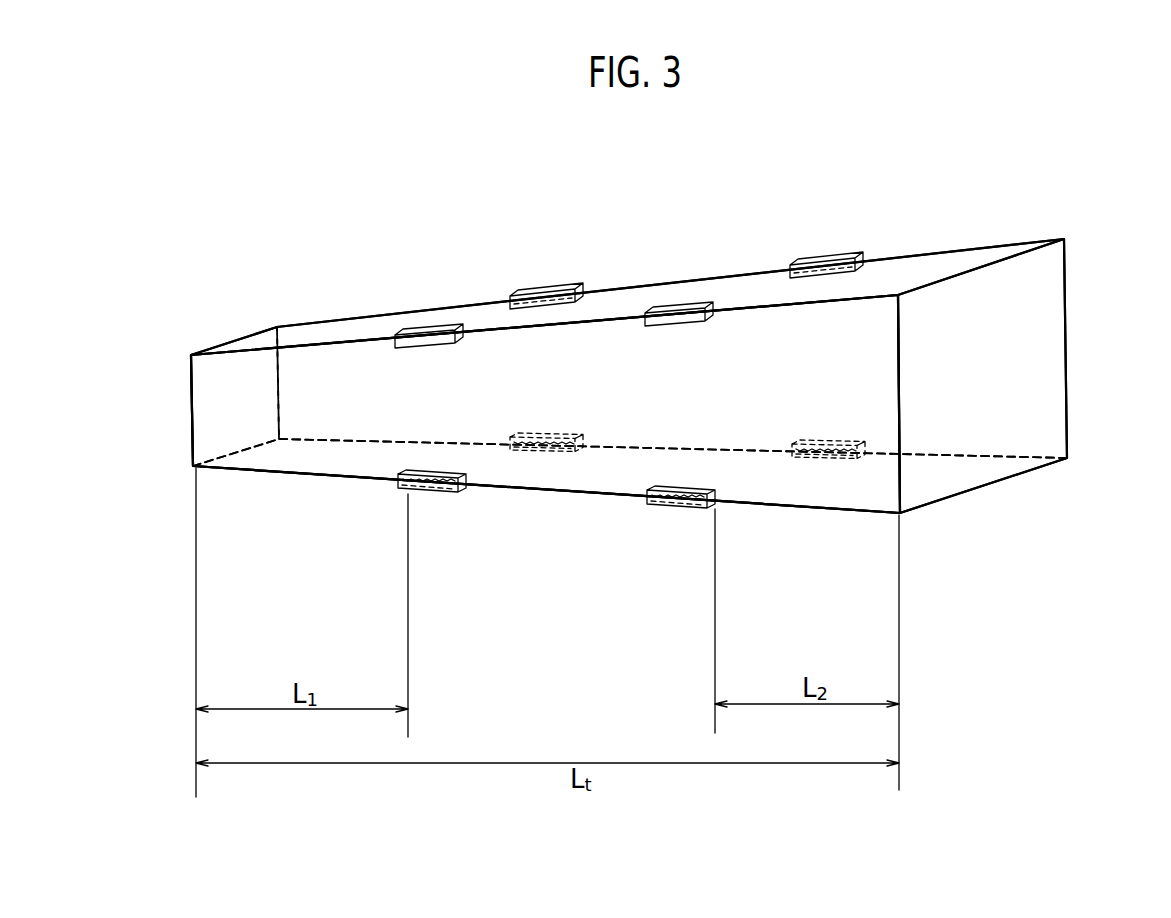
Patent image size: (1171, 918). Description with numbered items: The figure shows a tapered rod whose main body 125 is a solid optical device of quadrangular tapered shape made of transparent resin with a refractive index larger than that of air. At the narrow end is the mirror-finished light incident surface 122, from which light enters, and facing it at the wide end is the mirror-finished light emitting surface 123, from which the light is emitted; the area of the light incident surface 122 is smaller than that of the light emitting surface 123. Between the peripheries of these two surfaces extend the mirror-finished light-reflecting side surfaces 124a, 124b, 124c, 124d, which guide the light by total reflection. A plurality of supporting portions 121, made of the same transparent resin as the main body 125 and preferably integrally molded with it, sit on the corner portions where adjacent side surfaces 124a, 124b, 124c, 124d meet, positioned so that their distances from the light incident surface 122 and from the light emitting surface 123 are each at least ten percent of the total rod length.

The supporting portion 121 is at (432, 335).
The light incident surface 122 is at (224, 397).
The light emitting surface 123 is at (1047, 380).
The light-reflecting side surface 124a is at (953, 262).
The light-reflecting side surface 124b is at (833, 488).
The light-reflecting side surface 124c is at (962, 480).
The light-reflecting side surface 124d is at (1008, 320).
The main body 125 is at (352, 368).